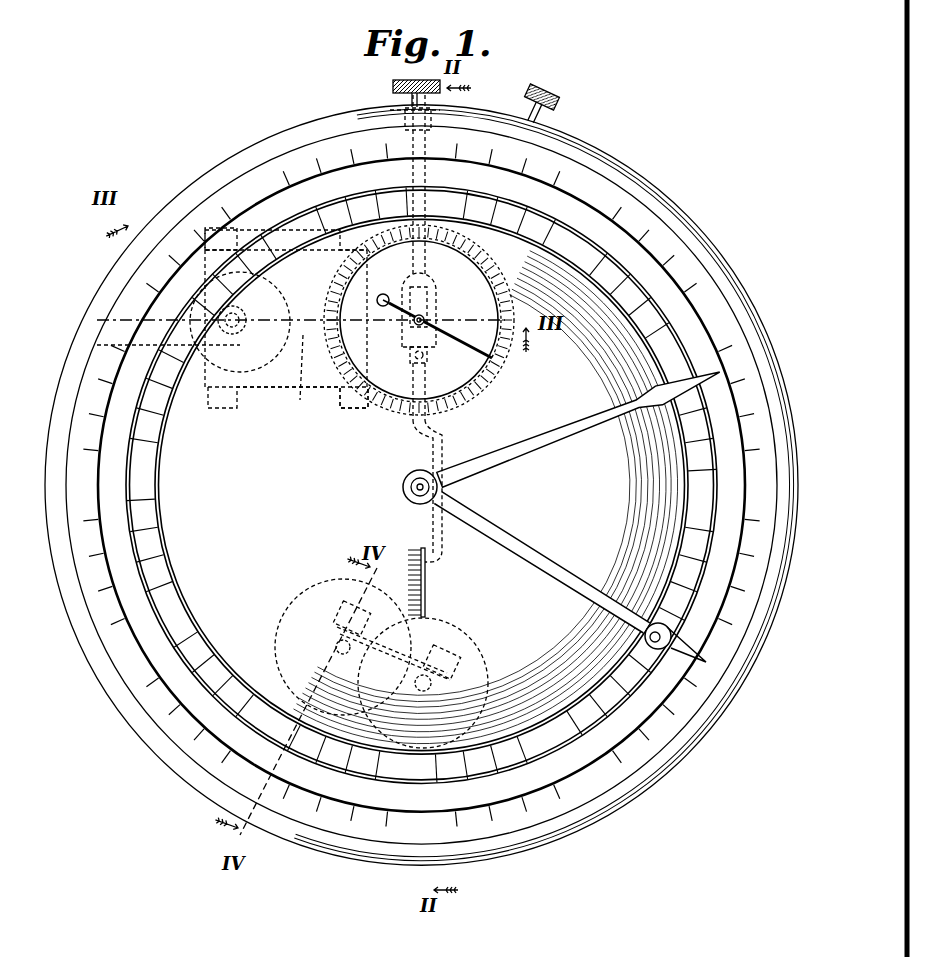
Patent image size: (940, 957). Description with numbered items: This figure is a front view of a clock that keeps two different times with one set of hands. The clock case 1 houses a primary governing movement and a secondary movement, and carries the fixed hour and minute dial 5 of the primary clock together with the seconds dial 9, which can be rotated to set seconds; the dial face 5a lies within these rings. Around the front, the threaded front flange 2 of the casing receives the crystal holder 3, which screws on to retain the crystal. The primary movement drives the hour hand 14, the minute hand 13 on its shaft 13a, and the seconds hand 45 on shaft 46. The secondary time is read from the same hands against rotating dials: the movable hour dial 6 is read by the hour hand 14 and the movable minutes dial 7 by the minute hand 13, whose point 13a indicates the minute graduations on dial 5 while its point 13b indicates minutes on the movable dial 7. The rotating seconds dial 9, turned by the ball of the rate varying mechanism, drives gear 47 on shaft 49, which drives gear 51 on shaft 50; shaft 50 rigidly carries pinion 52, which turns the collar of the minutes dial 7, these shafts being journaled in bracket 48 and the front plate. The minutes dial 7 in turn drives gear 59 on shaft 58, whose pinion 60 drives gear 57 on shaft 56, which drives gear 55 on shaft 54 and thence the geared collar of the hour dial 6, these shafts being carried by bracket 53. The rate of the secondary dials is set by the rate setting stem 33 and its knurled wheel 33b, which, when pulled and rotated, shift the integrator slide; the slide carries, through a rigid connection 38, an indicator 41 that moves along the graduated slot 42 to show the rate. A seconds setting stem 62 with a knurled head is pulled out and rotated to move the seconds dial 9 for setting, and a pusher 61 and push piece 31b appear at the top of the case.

The clock case 1 is at (236, 303).
The threaded front flange 2 is at (420, 333).
The crystal holder 3 is at (421, 476).
The hour and minute dial 5 is at (423, 461).
The dial 5a is at (246, 492).
The movable hour dial 6 is at (457, 507).
The movable minutes dial 7 is at (451, 499).
The seconds dial 9 is at (421, 443).
The minute hand 13 is at (562, 574).
The minute hand shaft 13a is at (403, 487).
The point of hand 13b is at (641, 656).
The hour hand 14 is at (517, 452).
The push piece 31b is at (432, 82).
The rate setting stem 33 is at (425, 98).
The knurled wheel 33b is at (395, 85).
The rigid connection 38 is at (443, 540).
The indicator 41 is at (427, 567).
The graduated slot 42 is at (427, 600).
The seconds hand 45 is at (527, 249).
The seconds hand shaft 46 is at (438, 298).
The gear 47 is at (300, 400).
The bracket 48 is at (277, 360).
The shaft 49 is at (336, 400).
The shaft 50 is at (128, 293).
The gear 51 is at (97, 345).
The pinion 52 is at (205, 230).
The bracket 53 is at (425, 700).
The shaft 54 is at (348, 660).
The gear 55 is at (333, 665).
The shaft 56 is at (333, 637).
The gear 57 is at (340, 600).
The shaft 58 is at (500, 742).
The gear 59 is at (560, 735).
The pinion 60 is at (445, 735).
The pusher 61 is at (557, 92).
The seconds setting stem 62 is at (552, 108).